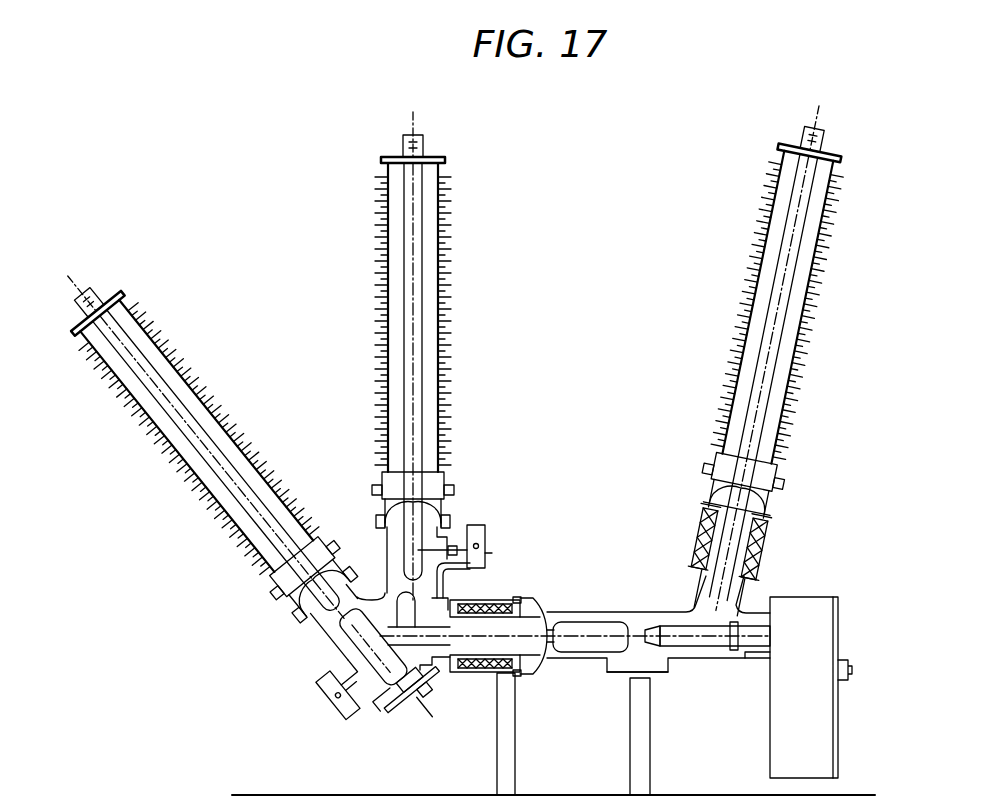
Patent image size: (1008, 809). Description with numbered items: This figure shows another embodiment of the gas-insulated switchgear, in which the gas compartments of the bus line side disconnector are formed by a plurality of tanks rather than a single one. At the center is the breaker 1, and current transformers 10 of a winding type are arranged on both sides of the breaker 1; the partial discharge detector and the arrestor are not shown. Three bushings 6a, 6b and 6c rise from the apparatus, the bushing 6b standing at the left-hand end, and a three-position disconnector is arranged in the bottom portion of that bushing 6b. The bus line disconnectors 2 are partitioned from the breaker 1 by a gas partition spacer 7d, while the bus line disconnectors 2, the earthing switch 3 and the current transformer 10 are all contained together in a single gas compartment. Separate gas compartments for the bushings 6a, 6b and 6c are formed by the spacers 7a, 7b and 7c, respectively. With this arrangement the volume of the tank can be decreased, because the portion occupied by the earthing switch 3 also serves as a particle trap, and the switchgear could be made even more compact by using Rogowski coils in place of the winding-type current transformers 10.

The breaker 1 is at (610, 612).
The bus line side disconnector 2 is at (432, 588).
The earthing switch 3 is at (387, 708).
The bushing 6a is at (824, 311).
The bushing 6b is at (207, 387).
The bushing 6c is at (452, 306).
The spacer 7a is at (768, 511).
The spacer 7b is at (350, 568).
The spacer 7c is at (440, 519).
The gas partition spacer 7d is at (530, 607).
The current transformer 10 is at (764, 544).